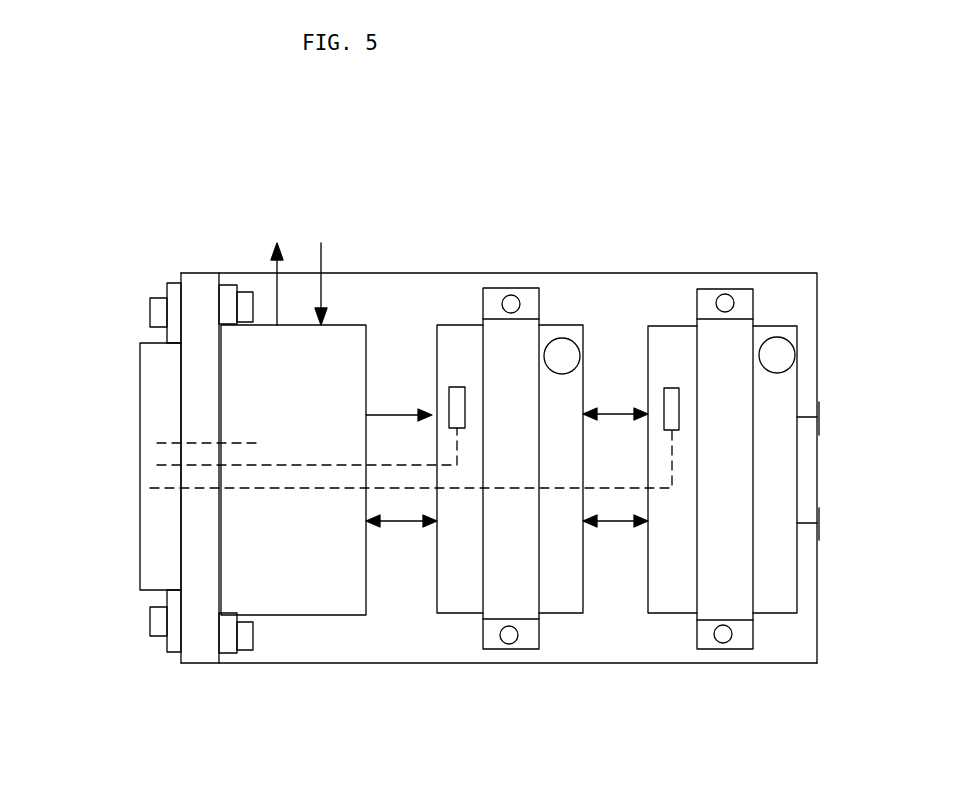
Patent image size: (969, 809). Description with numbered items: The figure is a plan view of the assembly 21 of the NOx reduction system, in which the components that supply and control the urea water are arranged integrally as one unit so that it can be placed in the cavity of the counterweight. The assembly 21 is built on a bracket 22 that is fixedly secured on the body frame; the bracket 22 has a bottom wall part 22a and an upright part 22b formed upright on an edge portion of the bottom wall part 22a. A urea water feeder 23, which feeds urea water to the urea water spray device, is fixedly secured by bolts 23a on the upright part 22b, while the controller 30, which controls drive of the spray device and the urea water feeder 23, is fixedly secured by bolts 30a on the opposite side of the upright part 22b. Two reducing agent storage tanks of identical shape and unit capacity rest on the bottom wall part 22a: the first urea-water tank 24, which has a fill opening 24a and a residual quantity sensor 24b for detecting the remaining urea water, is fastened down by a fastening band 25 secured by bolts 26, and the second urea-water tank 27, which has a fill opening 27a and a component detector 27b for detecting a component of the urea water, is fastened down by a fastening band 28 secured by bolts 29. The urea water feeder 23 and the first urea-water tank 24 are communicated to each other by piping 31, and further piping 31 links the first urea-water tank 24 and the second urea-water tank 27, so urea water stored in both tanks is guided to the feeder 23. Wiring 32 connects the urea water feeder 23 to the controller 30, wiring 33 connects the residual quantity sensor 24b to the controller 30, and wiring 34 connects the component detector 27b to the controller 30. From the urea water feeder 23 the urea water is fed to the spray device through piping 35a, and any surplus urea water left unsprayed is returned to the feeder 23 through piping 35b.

The assembly 21 is at (587, 665).
The bracket 22 is at (347, 665).
The bottom wall part 22a is at (308, 665).
The upright part 22b is at (200, 600).
The urea water feeder 23 is at (350, 325).
The bolts 23a is at (247, 298).
The first urea-water tank 24 is at (558, 418).
The fill opening 24a is at (560, 352).
The residual quantity sensor 24b is at (457, 395).
The fastening band 25 is at (500, 542).
The bolts 26 is at (511, 305).
The second urea-water tank 27 is at (799, 383).
The fill opening 27a is at (777, 355).
The component detector 27b is at (669, 393).
The fastening band 28 is at (723, 525).
The bolts 29 is at (725, 303).
The controller 30 is at (139, 591).
The bolts 30a is at (160, 308).
The piping 31 is at (385, 415).
The wiring 32 is at (207, 443).
The wiring 33 is at (238, 465).
The wiring 34 is at (250, 490).
The piping 35a is at (282, 288).
The piping 35b is at (325, 290).